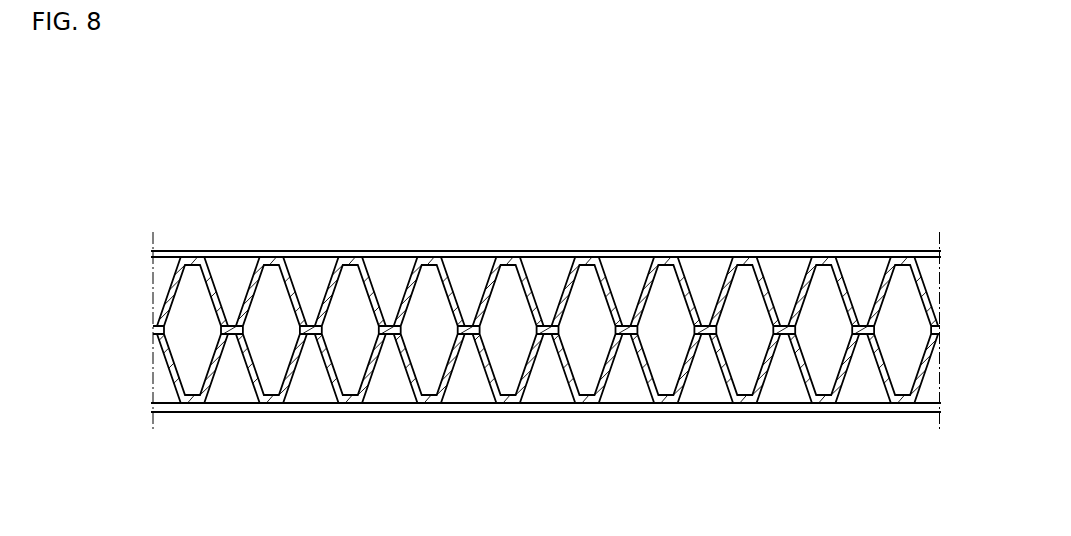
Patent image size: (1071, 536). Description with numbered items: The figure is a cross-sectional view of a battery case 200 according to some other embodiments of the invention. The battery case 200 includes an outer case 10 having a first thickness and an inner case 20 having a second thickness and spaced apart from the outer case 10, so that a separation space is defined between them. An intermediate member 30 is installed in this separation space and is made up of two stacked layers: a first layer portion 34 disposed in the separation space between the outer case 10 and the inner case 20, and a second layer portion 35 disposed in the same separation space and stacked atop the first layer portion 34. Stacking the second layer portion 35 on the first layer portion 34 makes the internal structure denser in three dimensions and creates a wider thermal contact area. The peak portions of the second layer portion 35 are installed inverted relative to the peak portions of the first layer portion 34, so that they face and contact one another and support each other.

The battery case 200 is at (160, 140).
The outer case 10 is at (547, 251).
The inner case 20 is at (547, 412).
The intermediate member 30 is at (79, 290).
The second layer portion 35 is at (168, 290).
The first layer portion 34 is at (168, 366).